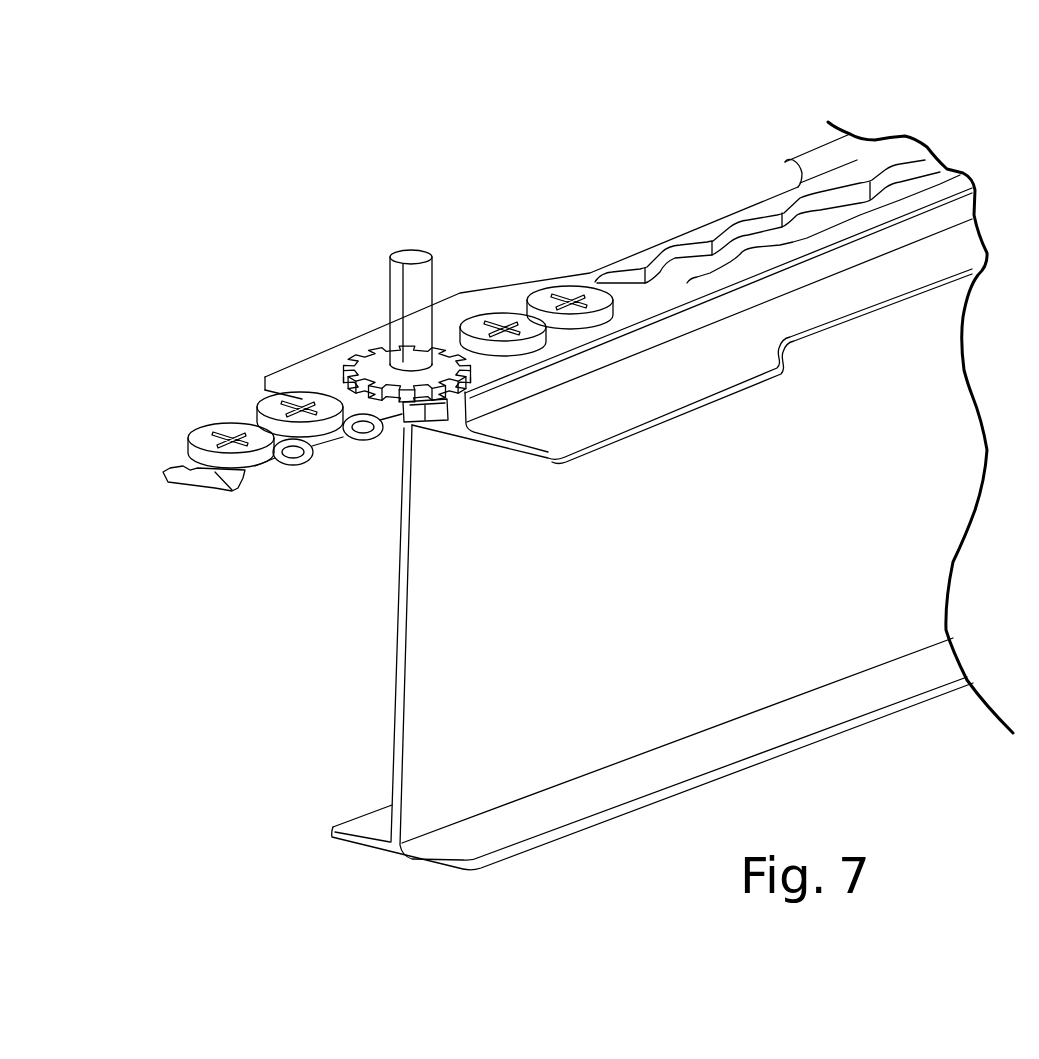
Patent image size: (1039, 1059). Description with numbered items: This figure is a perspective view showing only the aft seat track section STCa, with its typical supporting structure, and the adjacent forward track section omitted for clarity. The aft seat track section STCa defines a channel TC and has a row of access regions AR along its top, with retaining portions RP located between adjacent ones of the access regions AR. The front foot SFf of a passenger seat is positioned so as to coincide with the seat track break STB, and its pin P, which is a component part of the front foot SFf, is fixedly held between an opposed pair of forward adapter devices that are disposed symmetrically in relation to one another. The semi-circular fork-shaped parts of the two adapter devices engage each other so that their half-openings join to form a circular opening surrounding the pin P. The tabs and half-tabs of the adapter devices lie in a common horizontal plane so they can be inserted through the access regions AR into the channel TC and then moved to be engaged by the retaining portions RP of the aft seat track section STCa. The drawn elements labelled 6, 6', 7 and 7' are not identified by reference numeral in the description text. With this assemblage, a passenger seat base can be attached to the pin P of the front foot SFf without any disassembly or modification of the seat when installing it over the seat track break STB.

The chain link disc 6 is at (349, 336).
The chain link disc 6' is at (322, 338).
The disc fastening screw 7 is at (428, 354).
The disc fastening screw 7' is at (449, 371).
The pin P is at (423, 284).
The front foot SFf is at (362, 362).
The access regions AR is at (824, 220).
The retaining portions RP is at (860, 182).
The channel TC is at (432, 412).
The seat track break STB is at (397, 678).
The aft seat track section STCa is at (692, 580).